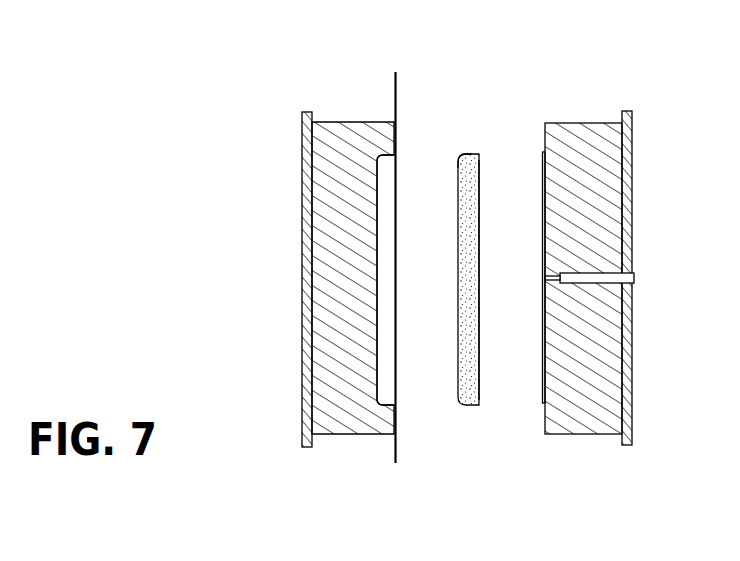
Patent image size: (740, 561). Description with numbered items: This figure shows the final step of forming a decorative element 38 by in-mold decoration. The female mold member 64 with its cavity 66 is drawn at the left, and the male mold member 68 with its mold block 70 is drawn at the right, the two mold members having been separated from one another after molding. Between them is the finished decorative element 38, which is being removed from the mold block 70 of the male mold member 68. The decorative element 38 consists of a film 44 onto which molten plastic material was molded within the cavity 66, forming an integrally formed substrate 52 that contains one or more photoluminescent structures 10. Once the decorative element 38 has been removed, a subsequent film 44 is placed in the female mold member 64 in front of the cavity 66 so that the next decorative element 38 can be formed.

The photoluminescent structure 10 is at (483, 181).
The decorative element 38 is at (456, 136).
The film 44 is at (394, 99).
The substrate 52 is at (470, 153).
The female mold member 64 is at (340, 435).
The cavity 66 is at (385, 383).
The male mold member 68 is at (595, 420).
The mold block 70 is at (545, 403).